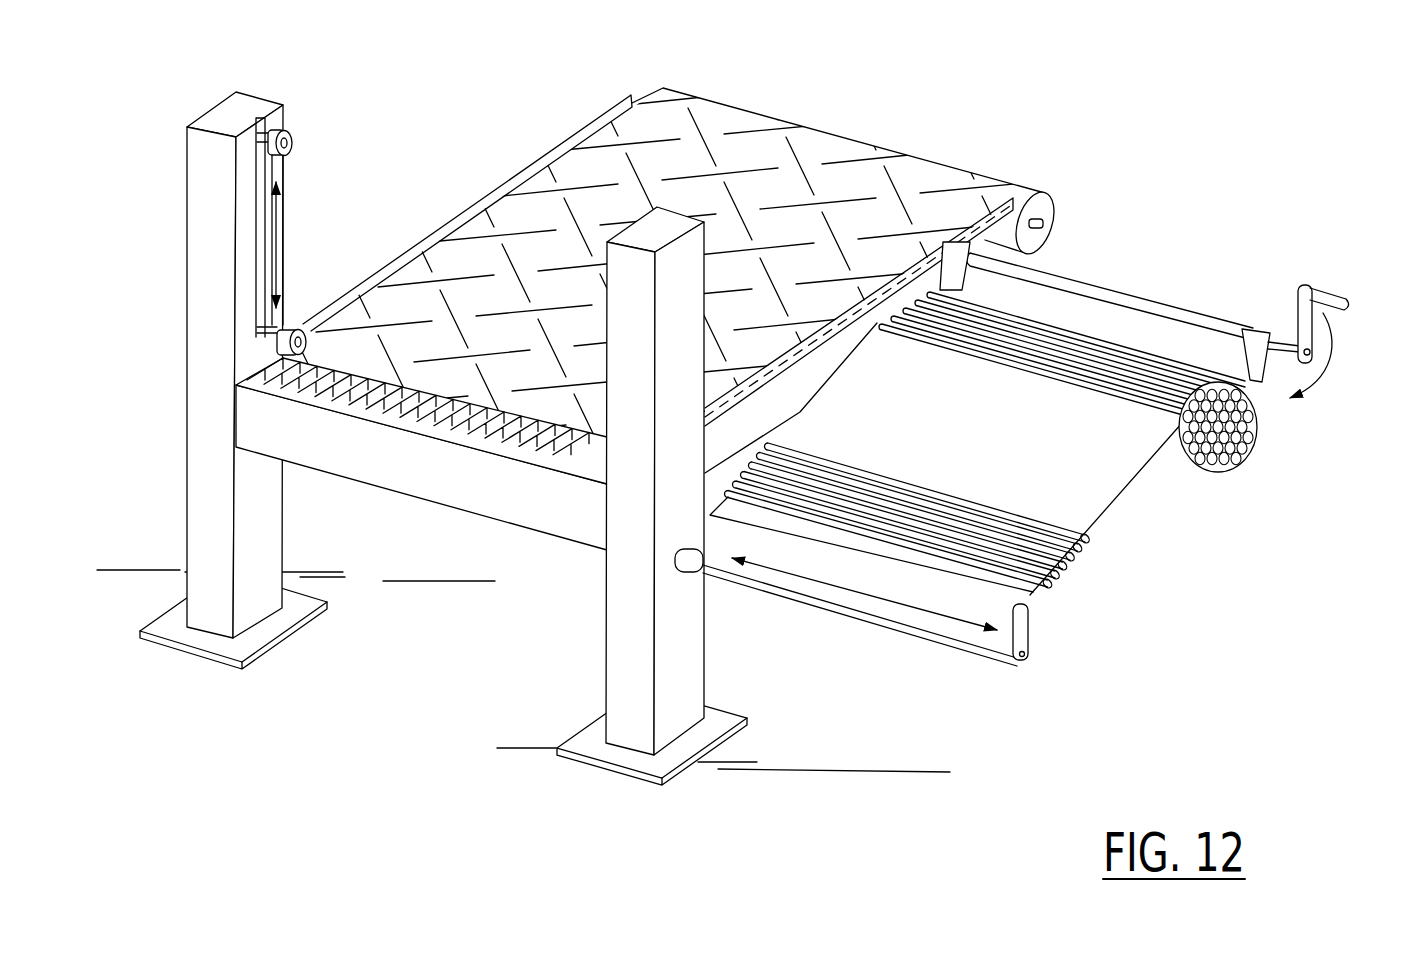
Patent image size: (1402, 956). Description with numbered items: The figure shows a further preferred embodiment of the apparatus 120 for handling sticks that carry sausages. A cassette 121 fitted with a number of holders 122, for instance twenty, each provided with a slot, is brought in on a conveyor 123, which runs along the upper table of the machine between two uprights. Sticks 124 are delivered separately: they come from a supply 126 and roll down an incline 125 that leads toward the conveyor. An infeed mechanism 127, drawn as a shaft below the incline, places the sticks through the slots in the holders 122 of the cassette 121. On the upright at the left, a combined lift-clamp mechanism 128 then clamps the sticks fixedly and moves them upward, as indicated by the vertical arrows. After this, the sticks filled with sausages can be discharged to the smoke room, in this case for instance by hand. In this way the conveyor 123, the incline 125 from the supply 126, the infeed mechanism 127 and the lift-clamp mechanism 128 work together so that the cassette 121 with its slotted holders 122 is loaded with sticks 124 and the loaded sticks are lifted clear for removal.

The apparatus 120 is at (723, 392).
The cassette 121 is at (455, 482).
The holders 122 is at (446, 388).
The conveyor 123 is at (786, 120).
The sticks 124 is at (1053, 583).
The incline 125 is at (1097, 507).
The supply 126 is at (1240, 452).
The infeed mechanism 127 is at (908, 627).
The combined lift-clamp mechanism 128 is at (308, 227).